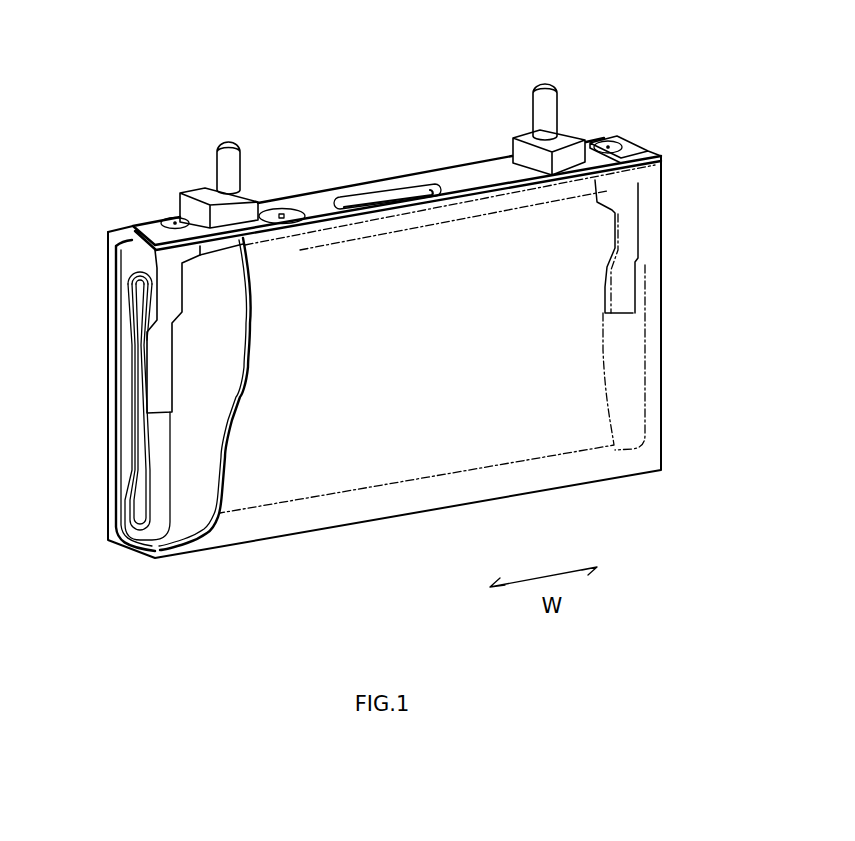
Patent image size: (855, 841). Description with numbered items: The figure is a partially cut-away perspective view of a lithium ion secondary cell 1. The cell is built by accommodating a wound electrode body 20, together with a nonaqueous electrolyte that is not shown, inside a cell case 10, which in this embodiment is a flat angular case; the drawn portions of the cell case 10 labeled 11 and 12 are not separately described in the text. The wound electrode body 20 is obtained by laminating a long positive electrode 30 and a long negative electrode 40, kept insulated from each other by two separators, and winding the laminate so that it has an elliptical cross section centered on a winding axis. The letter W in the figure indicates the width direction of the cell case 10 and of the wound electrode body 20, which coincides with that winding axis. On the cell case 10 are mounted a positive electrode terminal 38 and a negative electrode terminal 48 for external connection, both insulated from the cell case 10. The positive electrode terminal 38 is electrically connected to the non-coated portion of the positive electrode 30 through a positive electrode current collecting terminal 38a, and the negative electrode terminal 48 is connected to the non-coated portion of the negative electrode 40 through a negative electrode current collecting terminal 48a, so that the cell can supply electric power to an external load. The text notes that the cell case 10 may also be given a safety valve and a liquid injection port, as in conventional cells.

The lithium ion secondary cell 1 is at (118, 85).
The cell case 10 is at (740, 132).
The case body 11 is at (657, 186).
The lid 12 is at (652, 152).
The wound electrode body 20 is at (583, 367).
The positive electrode 30 is at (157, 457).
The positive electrode terminal 38 is at (226, 140).
The positive electrode current collecting terminal 38a is at (160, 373).
The negative electrode 40 is at (627, 408).
The negative electrode terminal 48 is at (546, 83).
The negative electrode current collecting terminal 48a is at (625, 294).